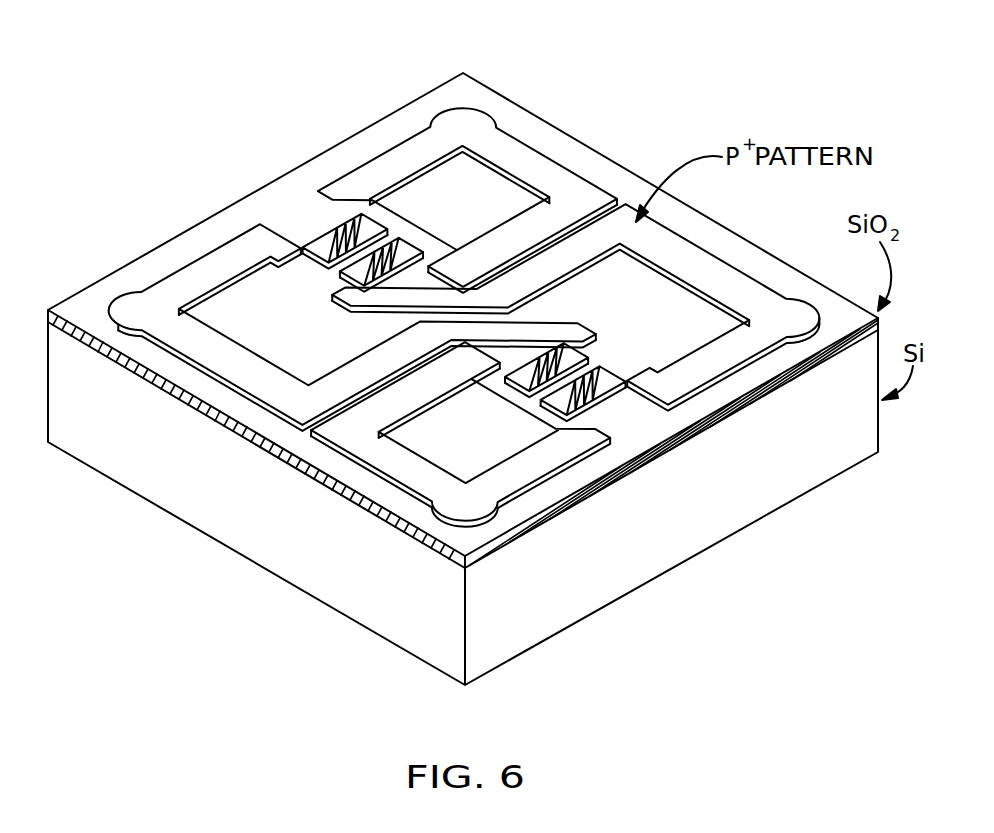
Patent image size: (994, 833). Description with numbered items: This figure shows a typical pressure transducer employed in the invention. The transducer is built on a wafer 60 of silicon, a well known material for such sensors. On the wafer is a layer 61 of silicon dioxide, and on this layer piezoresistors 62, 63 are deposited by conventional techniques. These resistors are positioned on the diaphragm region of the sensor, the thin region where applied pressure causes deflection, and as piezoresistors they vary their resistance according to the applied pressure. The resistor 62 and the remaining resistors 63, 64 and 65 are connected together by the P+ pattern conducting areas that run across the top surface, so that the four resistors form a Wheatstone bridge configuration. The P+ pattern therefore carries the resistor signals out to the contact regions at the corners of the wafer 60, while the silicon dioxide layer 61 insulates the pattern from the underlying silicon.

The wafer 60 is at (778, 462).
The layer of silicon dioxide 61 is at (565, 512).
The piezoresistor 62 is at (615, 395).
The piezoresistor 63 is at (570, 345).
The resistor 64 is at (392, 250).
The resistor 65 is at (320, 234).